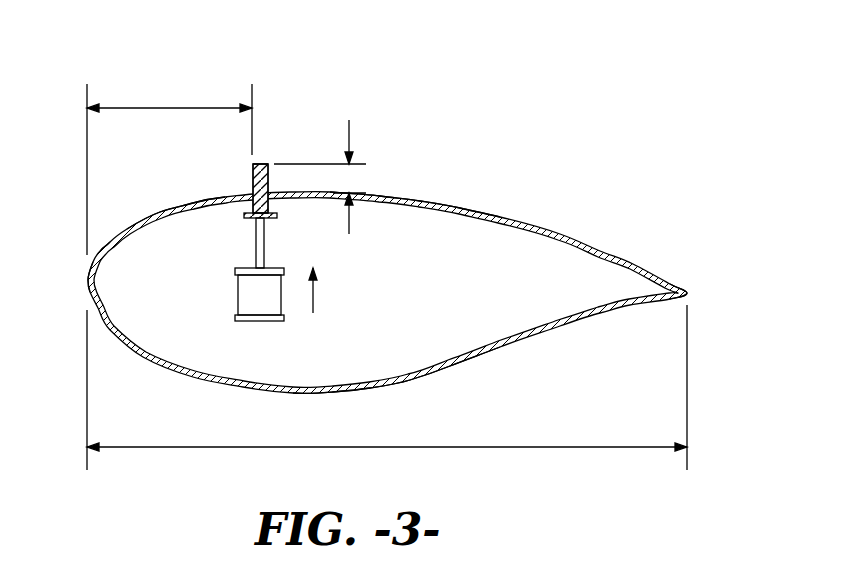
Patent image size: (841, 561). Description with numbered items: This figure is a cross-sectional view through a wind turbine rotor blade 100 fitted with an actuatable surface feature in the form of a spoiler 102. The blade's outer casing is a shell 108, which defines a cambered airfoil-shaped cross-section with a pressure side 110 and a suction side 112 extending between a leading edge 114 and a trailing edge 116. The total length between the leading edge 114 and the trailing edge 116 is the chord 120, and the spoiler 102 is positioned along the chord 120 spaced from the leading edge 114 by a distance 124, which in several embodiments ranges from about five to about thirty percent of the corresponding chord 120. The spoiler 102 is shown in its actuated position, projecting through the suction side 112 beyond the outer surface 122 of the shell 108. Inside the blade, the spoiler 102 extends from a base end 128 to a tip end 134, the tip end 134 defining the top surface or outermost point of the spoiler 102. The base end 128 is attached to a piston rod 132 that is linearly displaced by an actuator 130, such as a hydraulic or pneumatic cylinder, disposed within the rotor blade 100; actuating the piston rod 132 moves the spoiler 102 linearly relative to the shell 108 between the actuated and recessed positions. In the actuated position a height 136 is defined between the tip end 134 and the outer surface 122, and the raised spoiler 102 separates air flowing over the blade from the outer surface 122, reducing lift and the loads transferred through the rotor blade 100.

The rotor blade 100 is at (618, 126).
The spoiler 102 is at (247, 186).
The shell 108 is at (562, 228).
The pressure side 110 is at (410, 380).
The suction side 112 is at (420, 200).
The leading edge 114 is at (88, 280).
The trailing edge 116 is at (690, 290).
The chord 120 is at (507, 448).
The outer surface 122 is at (197, 203).
The distance 124 is at (147, 105).
The base end 128 is at (277, 214).
The actuator 130 is at (237, 295).
The piston rod 132 is at (256, 243).
The tip end 134 is at (258, 163).
The height 136 is at (350, 131).